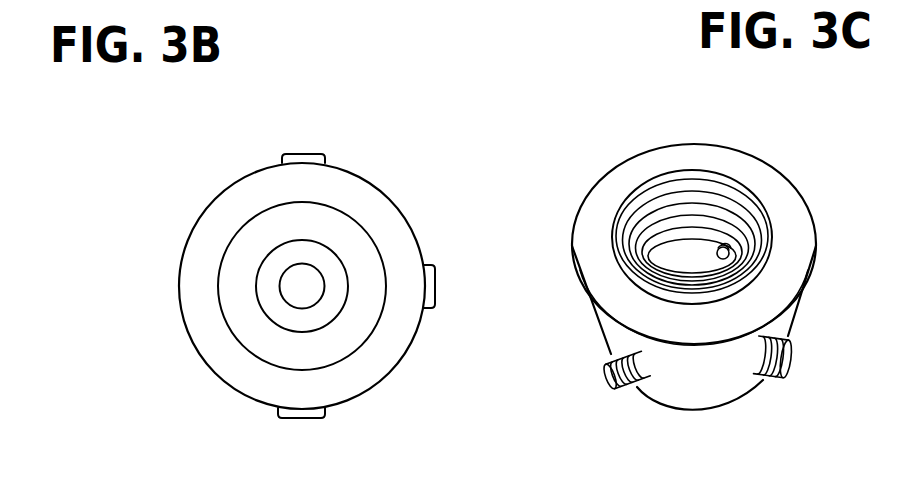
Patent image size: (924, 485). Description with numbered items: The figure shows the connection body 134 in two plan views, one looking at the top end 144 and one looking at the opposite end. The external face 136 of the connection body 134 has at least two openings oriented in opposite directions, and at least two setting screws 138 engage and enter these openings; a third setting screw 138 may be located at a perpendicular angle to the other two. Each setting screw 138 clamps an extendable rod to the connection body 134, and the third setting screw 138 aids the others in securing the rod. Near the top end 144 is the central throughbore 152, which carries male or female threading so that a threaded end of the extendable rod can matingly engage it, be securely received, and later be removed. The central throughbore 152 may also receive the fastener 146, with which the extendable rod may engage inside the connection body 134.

In FIG. 3B, the connection body 134 is at (150, 291).
In FIG. 3C, the connection body 134 is at (703, 120).
In FIG. 3C, the external face 136 is at (735, 380).
In FIG. 3B, the setting screws 138 is at (305, 154).
In FIG. 3C, the setting screws 138 is at (728, 248).
In FIG. 3B, the top end 144 is at (212, 353).
In FIG. 3C, the top end 144 is at (602, 216).
In FIG. 3B, the fastener 146 is at (262, 262).
In FIG. 3C, the central throughbore 152 is at (668, 242).